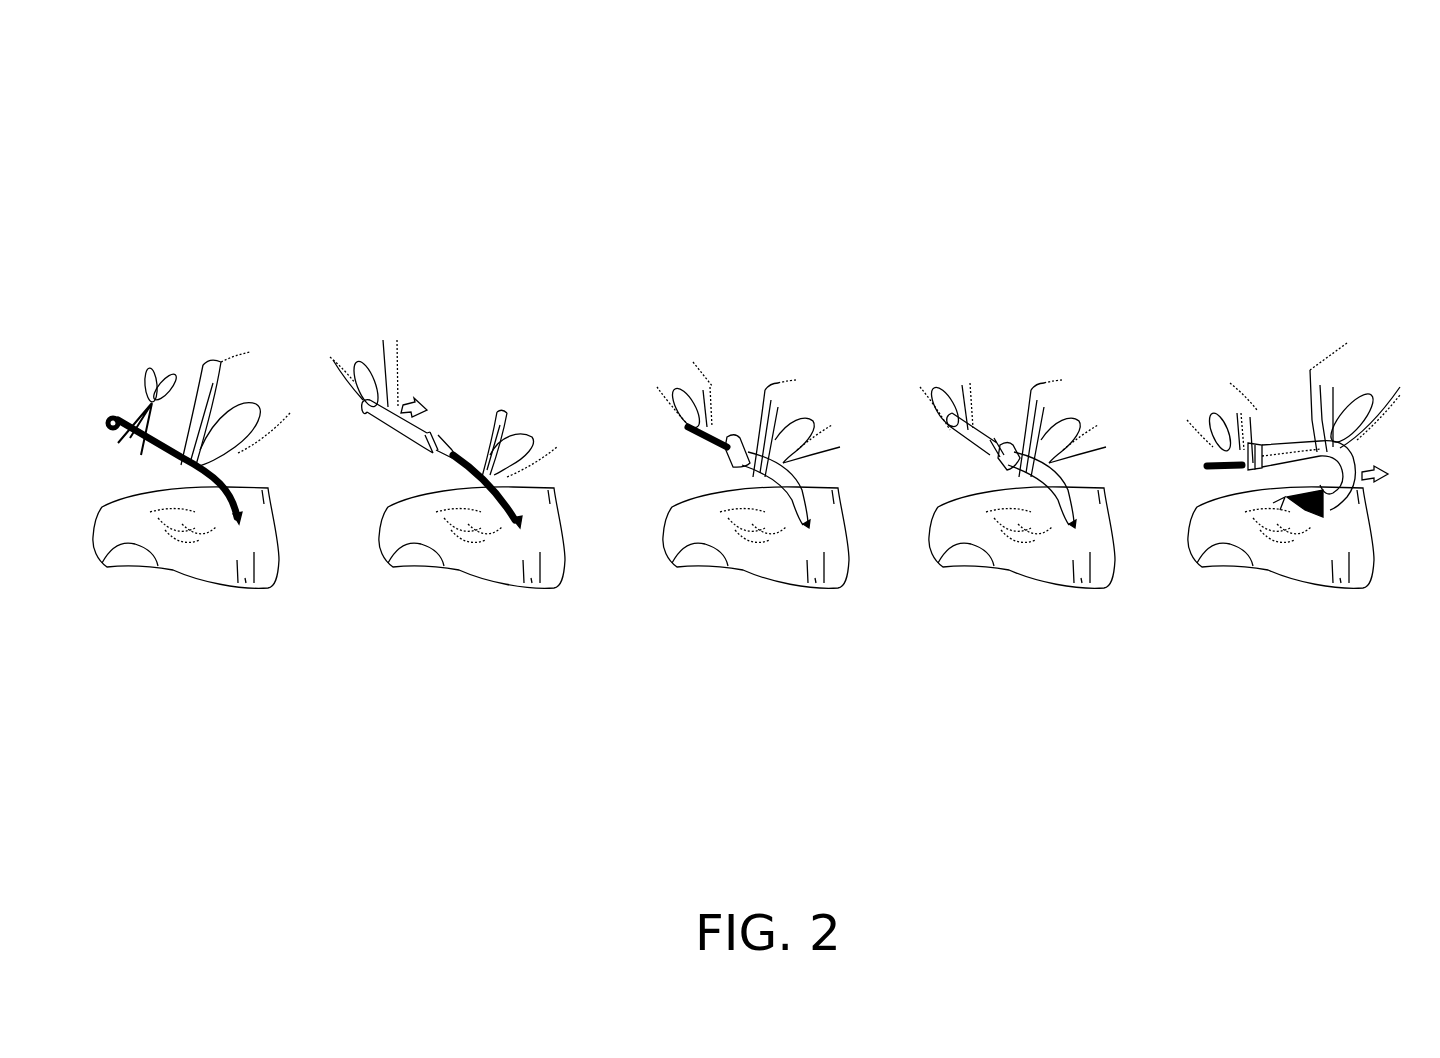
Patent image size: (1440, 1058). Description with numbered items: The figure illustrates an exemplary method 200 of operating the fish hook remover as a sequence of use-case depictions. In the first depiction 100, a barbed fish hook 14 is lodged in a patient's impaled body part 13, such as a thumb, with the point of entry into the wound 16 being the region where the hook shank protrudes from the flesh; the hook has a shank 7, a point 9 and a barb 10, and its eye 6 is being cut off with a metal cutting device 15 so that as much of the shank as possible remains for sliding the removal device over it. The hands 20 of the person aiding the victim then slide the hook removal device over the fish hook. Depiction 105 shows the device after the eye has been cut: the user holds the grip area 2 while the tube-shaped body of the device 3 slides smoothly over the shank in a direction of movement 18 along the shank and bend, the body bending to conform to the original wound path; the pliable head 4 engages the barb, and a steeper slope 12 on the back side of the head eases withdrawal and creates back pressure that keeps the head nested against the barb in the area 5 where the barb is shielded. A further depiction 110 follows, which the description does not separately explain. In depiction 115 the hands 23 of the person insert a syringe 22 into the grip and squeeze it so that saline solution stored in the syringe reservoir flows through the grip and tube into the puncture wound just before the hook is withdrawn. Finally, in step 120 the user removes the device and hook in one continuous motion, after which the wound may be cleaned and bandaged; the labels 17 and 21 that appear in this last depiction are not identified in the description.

The method of operation of the fish hook remover 200 is at (190, 100).
The illustrative use-case depiction 100 is at (240, 328).
The illustrative use-case depiction 105 is at (491, 328).
The step of advancing device 110 is at (765, 328).
The illustrative use-case depiction 115 is at (1040, 328).
The illustrative use-case depiction 120 is at (1281, 328).
The grip area 2 is at (370, 415).
The tube-shaped body of the device 3 is at (392, 423).
The head 4 is at (443, 440).
The area where the pliable device head nests against the hook barb 5 is at (753, 540).
The eye of the fish hook 6 is at (108, 418).
The shank 7 is at (418, 440).
The point of the fish hook 9 is at (158, 525).
The barb 10 is at (185, 530).
The steeper slope 12 is at (432, 433).
The impaled body part 13 is at (118, 520).
The fish hook 14 is at (160, 460).
The metal cutting device 15 is at (148, 397).
The point of entry into wound 16 is at (233, 525).
The hook 17 is at (1280, 510).
The direction of movement 18 is at (413, 400).
The hands 20 is at (225, 370).
The fingers 21 is at (1212, 390).
The syringe 22 is at (987, 423).
The hands 23 is at (937, 367).